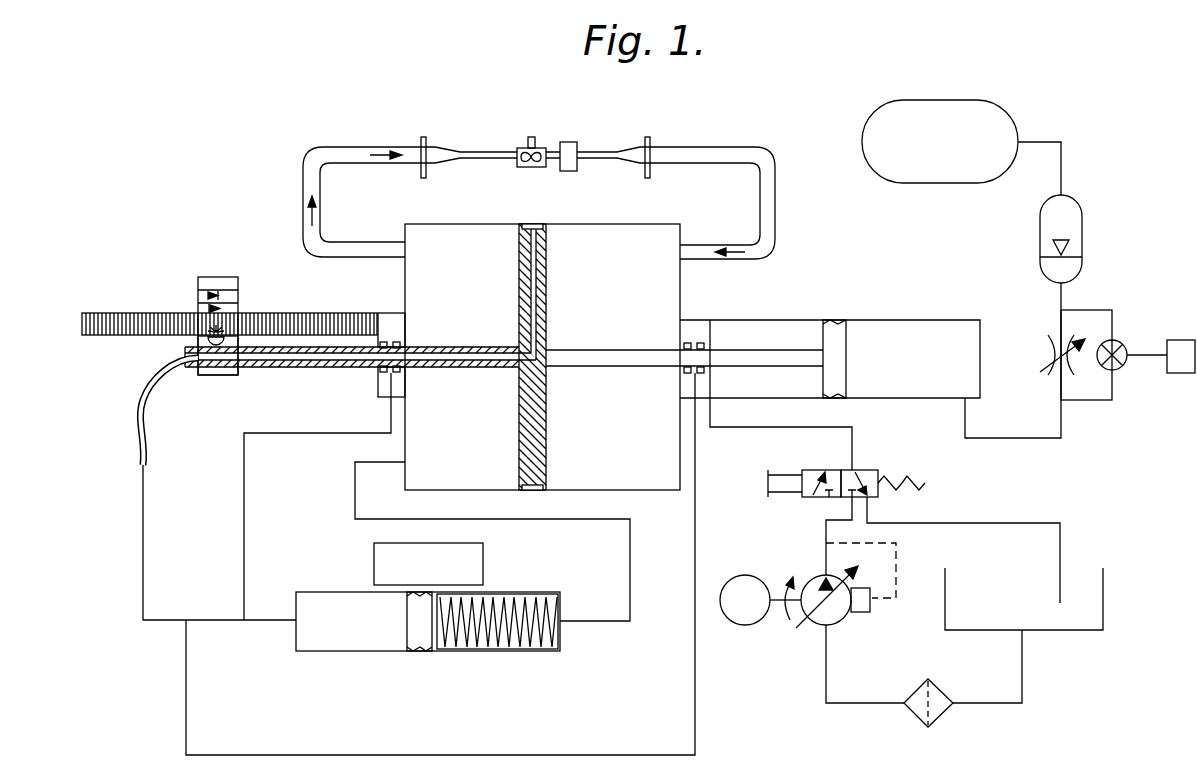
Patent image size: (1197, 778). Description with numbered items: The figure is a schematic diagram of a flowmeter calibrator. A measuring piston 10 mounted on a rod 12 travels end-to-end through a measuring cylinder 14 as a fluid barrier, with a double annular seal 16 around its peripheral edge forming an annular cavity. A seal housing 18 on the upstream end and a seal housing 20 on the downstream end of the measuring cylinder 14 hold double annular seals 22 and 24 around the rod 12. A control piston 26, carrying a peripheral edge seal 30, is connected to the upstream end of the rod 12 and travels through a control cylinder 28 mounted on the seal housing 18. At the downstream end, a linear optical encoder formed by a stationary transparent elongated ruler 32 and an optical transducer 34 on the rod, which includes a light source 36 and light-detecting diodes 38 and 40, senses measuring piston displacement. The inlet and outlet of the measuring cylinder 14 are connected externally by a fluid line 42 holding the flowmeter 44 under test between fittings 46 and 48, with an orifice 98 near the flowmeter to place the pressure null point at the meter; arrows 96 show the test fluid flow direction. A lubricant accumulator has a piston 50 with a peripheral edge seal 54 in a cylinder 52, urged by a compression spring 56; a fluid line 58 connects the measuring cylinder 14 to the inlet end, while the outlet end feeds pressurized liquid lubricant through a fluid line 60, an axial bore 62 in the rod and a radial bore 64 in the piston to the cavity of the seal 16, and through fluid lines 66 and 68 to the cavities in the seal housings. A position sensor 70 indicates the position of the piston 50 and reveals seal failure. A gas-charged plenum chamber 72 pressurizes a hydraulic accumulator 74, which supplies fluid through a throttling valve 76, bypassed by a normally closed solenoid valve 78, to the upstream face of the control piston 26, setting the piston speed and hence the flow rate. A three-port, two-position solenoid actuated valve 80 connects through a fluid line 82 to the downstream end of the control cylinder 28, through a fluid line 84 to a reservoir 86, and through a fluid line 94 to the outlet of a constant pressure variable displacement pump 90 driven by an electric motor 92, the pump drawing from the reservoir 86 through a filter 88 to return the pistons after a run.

The measuring piston 10 is at (548, 292).
The rod 12 is at (600, 350).
The measuring cylinder 14 is at (611, 224).
The double annular seal 16 is at (538, 218).
The seal housing 18 is at (700, 320).
The seal housing 20 is at (395, 313).
The double annular seal 22 is at (705, 382).
The double annular seal 24 is at (382, 392).
The control piston 26 is at (836, 344).
The control cylinder 28 is at (757, 320).
The peripheral edge seal 30 is at (860, 400).
The transparent elongated ruler 32 is at (280, 313).
The optical transducer 34 is at (218, 375).
The light source 36 is at (205, 344).
The light-detecting diode 38 is at (232, 300).
The light-detecting diode 40 is at (220, 290).
The fluid line 42 is at (755, 148).
The flowmeter 44 is at (547, 148).
The fitting 46 is at (426, 137).
The fitting 48 is at (650, 137).
The piston 50 is at (420, 615).
The cylinder 52 is at (530, 652).
The peripheral edge seal 54 is at (410, 652).
The compression spring 56 is at (560, 640).
The fluid line 58 is at (355, 475).
The fluid line 60 is at (148, 430).
The axial bore 62 is at (285, 368).
The radial bore 64 is at (519, 270).
The fluid line 66 is at (697, 518).
The fluid line 68 is at (250, 433).
The position sensor 70 is at (483, 561).
The plenum chamber 72 is at (960, 100).
The hydraulic accumulator 74 is at (1082, 212).
The throttling valve 76 is at (1044, 355).
The solenoid valve 78 is at (1124, 345).
The solenoid actuated valve 80 is at (870, 470).
The fluid line 82 is at (814, 430).
The fluid line 84 is at (1060, 552).
The reservoir 86 is at (1104, 592).
The filter 88 is at (940, 690).
The constant pressure variable displacement pump 90 is at (842, 622).
The electric motor 92 is at (741, 575).
The fluid line 94 is at (836, 522).
The arrows 96 is at (372, 153).
The orifice 98 is at (572, 142).